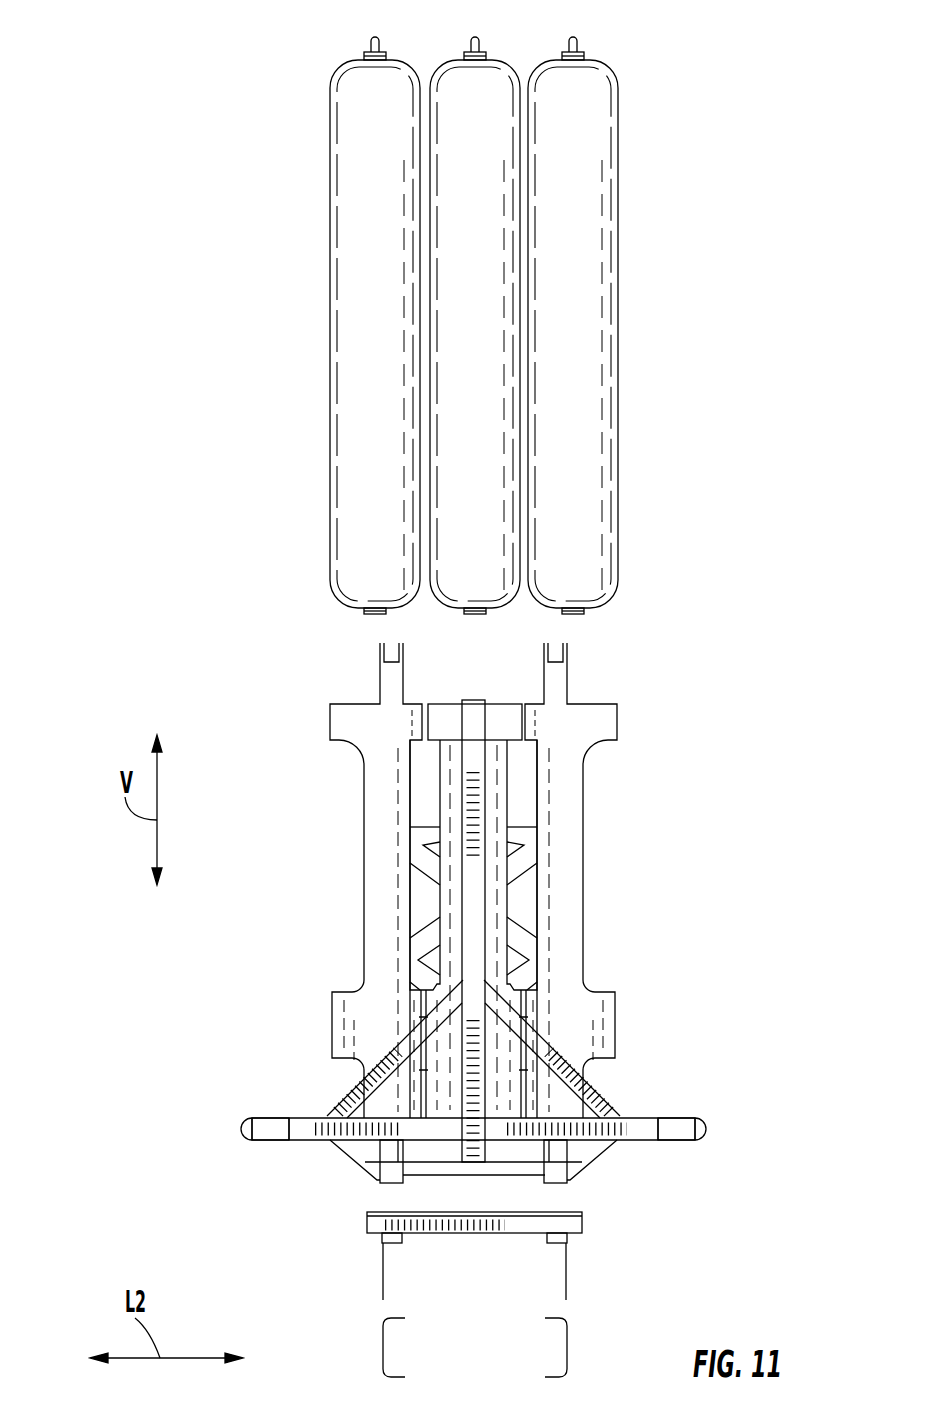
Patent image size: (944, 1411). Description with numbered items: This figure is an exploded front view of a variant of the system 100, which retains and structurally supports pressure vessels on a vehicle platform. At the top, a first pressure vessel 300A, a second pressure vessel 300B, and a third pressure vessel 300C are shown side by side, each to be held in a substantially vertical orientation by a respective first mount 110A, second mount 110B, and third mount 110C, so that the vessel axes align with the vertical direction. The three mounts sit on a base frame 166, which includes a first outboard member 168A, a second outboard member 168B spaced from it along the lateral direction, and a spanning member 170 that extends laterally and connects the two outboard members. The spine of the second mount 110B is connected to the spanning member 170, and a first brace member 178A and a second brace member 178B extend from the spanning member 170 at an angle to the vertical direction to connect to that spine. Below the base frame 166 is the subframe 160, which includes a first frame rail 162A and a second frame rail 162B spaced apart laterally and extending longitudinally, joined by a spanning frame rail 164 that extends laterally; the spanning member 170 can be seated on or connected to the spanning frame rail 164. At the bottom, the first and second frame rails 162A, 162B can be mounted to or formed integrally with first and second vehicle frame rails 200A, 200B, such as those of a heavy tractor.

The system 100 is at (720, 611).
The first mount 110A is at (325, 698).
The second mount 110B is at (497, 698).
The third mount 110C is at (592, 693).
The subframe 160 is at (556, 1243).
The first frame rail 162A is at (383, 1285).
The second frame rail 162B is at (566, 1285).
The spanning frame rail 164 is at (497, 1225).
The base frame 166 is at (493, 1077).
The first outboard member 168A is at (272, 1133).
The second outboard member 168B is at (683, 1128).
The spanning member 170 is at (323, 1130).
The first brace member 178A is at (345, 1108).
The second brace member 178B is at (595, 1105).
The first vehicle frame rail 200A is at (383, 1350).
The second vehicle frame rail 200B is at (567, 1350).
The first pressure vessel 300A is at (348, 95).
The second pressure vessel 300B is at (455, 95).
The third pressure vessel 300C is at (595, 95).